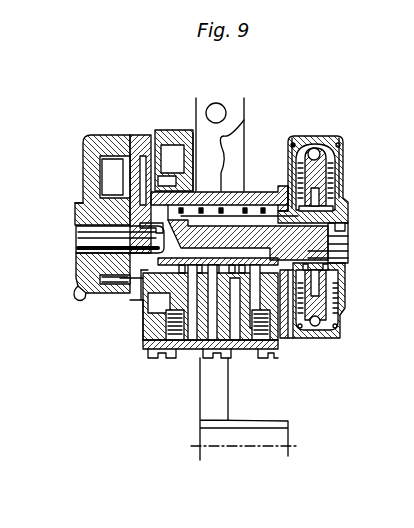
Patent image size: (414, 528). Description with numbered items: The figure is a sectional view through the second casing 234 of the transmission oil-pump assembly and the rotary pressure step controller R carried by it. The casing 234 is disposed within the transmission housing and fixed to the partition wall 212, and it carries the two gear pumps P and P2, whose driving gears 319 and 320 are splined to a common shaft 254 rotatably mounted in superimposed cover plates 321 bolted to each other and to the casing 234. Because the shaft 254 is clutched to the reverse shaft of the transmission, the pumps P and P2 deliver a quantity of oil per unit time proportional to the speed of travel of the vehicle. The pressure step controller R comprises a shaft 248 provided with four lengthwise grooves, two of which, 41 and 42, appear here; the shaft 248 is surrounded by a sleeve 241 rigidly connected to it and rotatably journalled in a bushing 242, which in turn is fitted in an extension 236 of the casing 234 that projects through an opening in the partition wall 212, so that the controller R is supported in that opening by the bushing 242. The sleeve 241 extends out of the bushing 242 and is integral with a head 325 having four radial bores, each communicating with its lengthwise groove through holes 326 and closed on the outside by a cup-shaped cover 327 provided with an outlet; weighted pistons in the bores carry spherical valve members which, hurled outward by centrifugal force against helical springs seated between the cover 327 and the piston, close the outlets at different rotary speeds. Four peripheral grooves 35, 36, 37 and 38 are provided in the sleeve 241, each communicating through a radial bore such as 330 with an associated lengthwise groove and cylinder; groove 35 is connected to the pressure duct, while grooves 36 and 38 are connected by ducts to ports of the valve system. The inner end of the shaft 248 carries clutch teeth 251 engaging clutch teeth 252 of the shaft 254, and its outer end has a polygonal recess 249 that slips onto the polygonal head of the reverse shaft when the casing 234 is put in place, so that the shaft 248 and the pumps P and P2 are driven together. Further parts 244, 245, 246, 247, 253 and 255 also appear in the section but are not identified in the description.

The cover plates 321 is at (128, 126).
The second casing 234 is at (167, 122).
The window opening 253 is at (108, 190).
The support block 255 is at (143, 185).
The partition wall 212 is at (208, 166).
The bushing 242 is at (242, 190).
The sleeve 241 is at (273, 180).
The cup-shaped cover 327 is at (285, 136).
The rotary pressure step controller R is at (343, 117).
The head 325 is at (336, 140).
The driving gear 319 is at (67, 196).
The radial bore 330 is at (203, 214).
The holes 326 is at (308, 213).
The polygonal recess 249 is at (337, 217).
The lengthwise groove 42 is at (322, 225).
The shaft 248 is at (312, 243).
The lengthwise groove 41 is at (339, 260).
The clutch teeth 251 is at (145, 229).
The common shaft 254 is at (73, 226).
The lower housing 247 is at (70, 250).
The clutch teeth 252 is at (70, 270).
The peripheral groove 35 is at (176, 256).
The peripheral groove 38 is at (201, 257).
The peripheral groove 36 is at (220, 257).
The peripheral groove 37 is at (250, 250).
The gear pump P2 is at (113, 273).
The gear pump P is at (140, 268).
The driving gear 320 is at (128, 292).
The bore 246 is at (125, 342).
The wall 245 is at (142, 322).
The main body 244 is at (218, 343).
The extension 236 is at (276, 324).